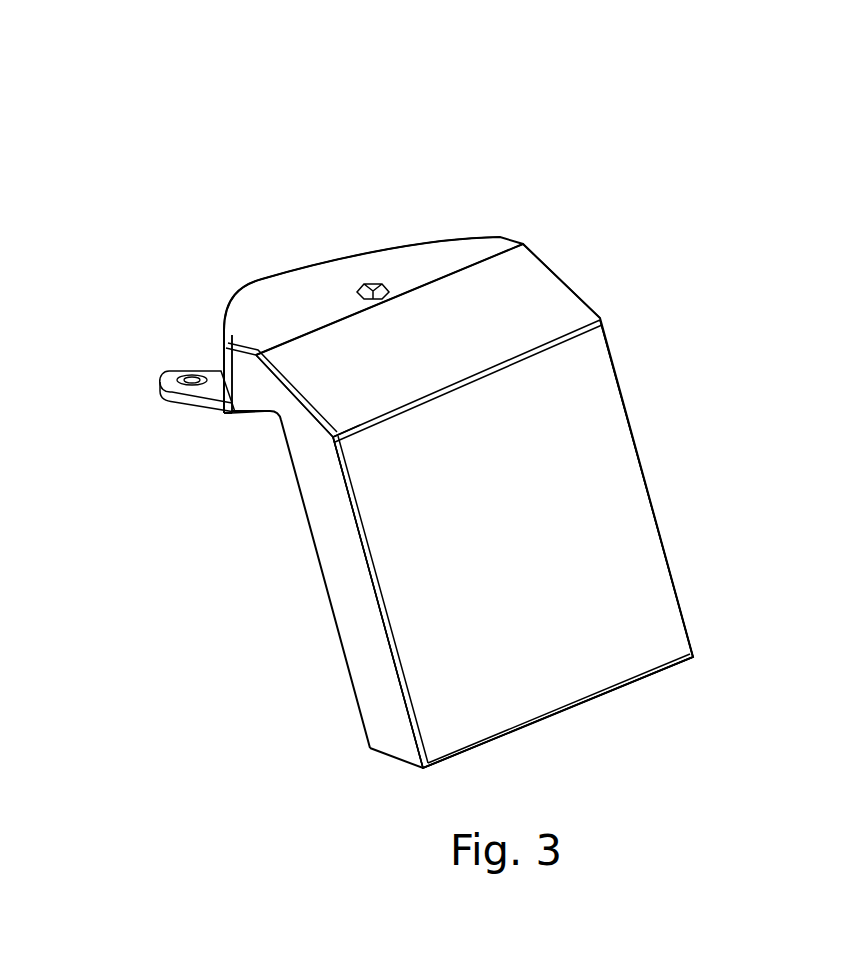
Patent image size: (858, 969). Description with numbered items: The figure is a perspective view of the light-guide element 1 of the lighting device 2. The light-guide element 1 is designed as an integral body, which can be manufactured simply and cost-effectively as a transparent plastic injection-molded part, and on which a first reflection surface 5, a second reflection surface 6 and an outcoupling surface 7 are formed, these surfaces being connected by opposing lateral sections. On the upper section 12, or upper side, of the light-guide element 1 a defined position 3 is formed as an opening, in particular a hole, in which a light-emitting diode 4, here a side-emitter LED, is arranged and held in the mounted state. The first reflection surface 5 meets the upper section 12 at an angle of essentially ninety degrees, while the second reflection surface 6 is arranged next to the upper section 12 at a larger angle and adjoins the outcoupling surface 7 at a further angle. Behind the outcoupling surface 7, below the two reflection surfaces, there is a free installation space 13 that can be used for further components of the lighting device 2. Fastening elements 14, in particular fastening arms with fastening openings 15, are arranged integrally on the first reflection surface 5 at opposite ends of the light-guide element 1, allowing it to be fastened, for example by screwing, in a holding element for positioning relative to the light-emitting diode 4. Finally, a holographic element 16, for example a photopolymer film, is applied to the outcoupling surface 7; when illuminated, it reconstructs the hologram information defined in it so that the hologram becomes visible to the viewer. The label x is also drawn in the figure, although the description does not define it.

The light-guide element 1 is at (442, 237).
The lighting device 2 is at (589, 166).
The defined position 3 is at (398, 292).
The light-emitting diode 4 is at (367, 287).
The first reflection surface 5 is at (224, 347).
The second reflection surface 6 is at (528, 292).
The outcoupling surface 7 is at (618, 472).
The upper section 12 is at (290, 292).
The free installation space 13 is at (224, 650).
The fastening elements 14 is at (162, 402).
The fastening openings 15 is at (177, 372).
The holographic element 16 is at (618, 472).
The axis x is at (243, 288).